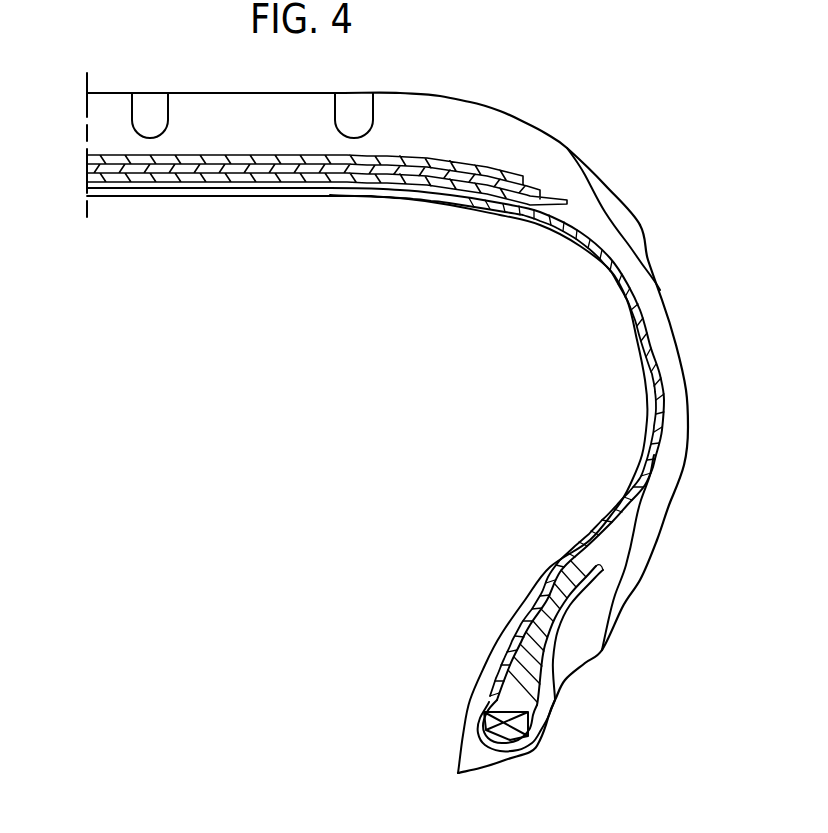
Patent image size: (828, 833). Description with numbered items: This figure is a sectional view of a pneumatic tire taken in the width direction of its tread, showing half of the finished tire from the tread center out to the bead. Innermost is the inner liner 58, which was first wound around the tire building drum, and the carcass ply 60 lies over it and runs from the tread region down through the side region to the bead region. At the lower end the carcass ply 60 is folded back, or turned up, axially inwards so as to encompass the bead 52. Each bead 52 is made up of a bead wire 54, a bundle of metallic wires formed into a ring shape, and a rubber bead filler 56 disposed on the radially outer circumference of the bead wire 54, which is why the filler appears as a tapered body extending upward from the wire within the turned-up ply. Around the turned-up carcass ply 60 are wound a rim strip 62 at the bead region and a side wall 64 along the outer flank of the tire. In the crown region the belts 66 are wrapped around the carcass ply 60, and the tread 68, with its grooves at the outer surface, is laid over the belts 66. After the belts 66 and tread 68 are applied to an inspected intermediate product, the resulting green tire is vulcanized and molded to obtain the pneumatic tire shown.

The bead 52 is at (670, 665).
The bead wire 54 is at (528, 727).
The rubber bead filler 56 is at (528, 683).
The inner liner 58 is at (643, 449).
The carcass ply 60 is at (665, 387).
The rim strip 62 is at (543, 735).
The side wall 64 is at (662, 490).
The belts 66 is at (477, 170).
The tread 68 is at (425, 92).